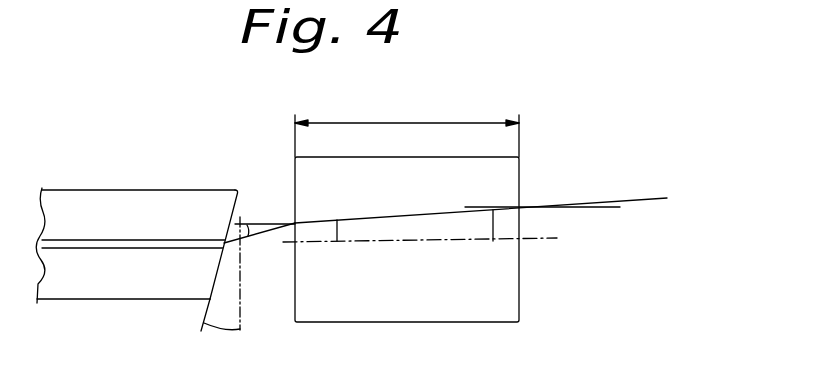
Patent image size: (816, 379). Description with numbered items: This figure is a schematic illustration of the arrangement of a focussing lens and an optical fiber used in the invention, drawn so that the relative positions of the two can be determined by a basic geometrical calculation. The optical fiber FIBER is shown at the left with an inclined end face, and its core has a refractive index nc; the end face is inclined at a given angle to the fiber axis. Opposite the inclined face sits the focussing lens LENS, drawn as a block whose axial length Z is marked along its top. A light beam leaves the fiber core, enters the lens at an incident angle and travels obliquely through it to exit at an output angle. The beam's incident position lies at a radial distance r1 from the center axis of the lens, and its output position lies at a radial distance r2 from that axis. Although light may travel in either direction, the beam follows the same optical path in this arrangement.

The optical fiber FIBER is at (136, 193).
The refractive index of the fiber core nc is at (117, 240).
The focussing lens LENS is at (475, 188).
The axial length of the focussing lens Z is at (407, 125).
The radial distance from incident position to center axis r1 is at (350, 234).
The radial distance from output position to center axis r2 is at (541, 226).